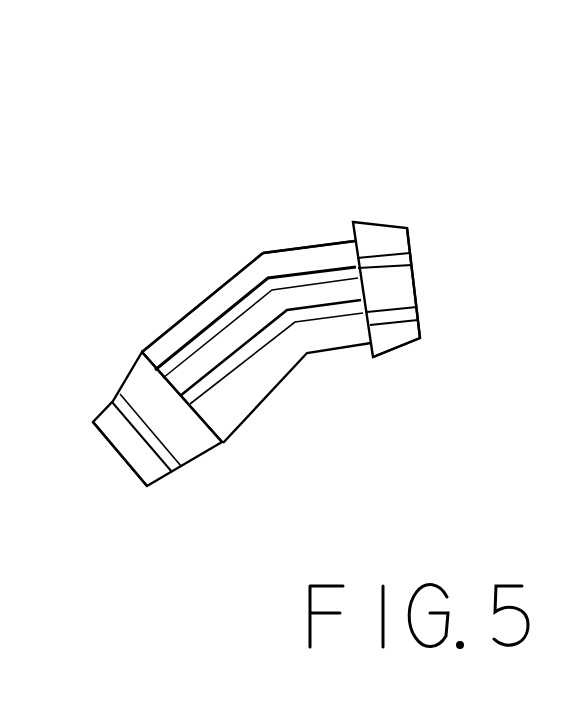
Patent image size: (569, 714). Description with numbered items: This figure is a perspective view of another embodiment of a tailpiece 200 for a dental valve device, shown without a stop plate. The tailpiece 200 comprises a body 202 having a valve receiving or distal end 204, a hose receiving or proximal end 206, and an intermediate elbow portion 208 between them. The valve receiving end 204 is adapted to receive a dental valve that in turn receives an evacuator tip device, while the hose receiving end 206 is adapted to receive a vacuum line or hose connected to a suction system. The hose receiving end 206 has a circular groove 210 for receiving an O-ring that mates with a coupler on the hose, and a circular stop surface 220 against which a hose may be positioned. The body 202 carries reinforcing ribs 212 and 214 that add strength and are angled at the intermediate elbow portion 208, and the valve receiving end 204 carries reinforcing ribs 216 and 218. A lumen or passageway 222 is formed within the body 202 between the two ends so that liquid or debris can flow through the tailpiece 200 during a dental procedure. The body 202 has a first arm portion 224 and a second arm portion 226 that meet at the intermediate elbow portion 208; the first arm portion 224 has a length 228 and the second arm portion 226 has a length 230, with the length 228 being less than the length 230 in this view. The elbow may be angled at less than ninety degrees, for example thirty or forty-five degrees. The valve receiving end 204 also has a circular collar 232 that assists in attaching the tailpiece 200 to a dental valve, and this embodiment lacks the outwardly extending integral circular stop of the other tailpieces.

The tailpiece 200 is at (272, 294).
The body 202 is at (219, 333).
The valve receiving end 204 is at (440, 285).
The hose receiving end 206 is at (126, 452).
The intermediate elbow portion 208 is at (252, 236).
The circular groove 210 is at (165, 468).
The reinforcing rib 212 is at (193, 343).
The reinforcing rib 214 is at (228, 383).
The reinforcing rib 216 is at (388, 258).
The reinforcing rib 218 is at (395, 317).
The circular stop surface 220 is at (150, 362).
The lumen 222 is at (431, 298).
The first arm portion 224 is at (320, 250).
The second arm portion 226 is at (218, 302).
The length 228 is at (343, 350).
The length 230 is at (152, 341).
The circular collar 232 is at (418, 340).